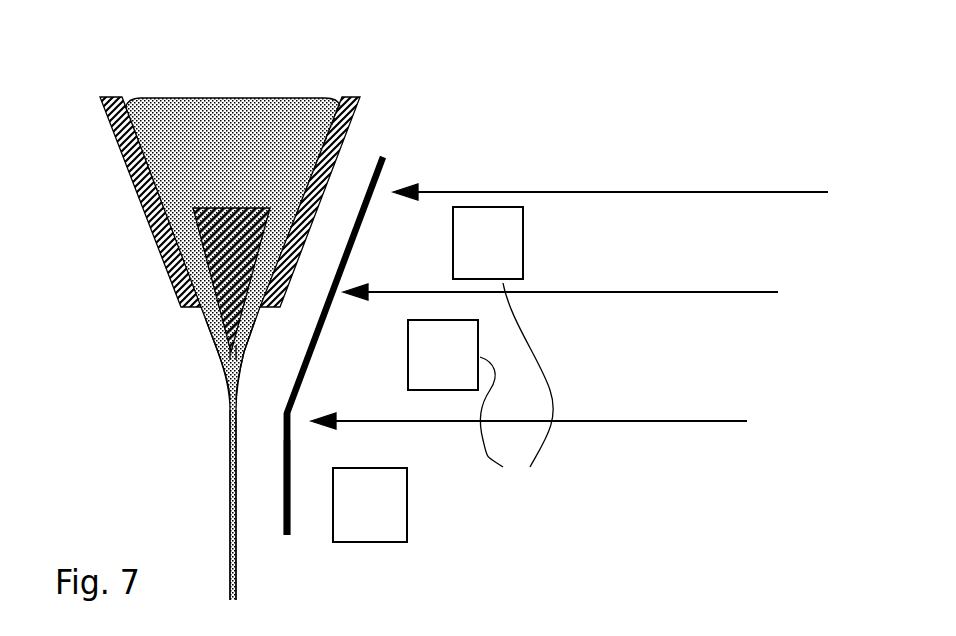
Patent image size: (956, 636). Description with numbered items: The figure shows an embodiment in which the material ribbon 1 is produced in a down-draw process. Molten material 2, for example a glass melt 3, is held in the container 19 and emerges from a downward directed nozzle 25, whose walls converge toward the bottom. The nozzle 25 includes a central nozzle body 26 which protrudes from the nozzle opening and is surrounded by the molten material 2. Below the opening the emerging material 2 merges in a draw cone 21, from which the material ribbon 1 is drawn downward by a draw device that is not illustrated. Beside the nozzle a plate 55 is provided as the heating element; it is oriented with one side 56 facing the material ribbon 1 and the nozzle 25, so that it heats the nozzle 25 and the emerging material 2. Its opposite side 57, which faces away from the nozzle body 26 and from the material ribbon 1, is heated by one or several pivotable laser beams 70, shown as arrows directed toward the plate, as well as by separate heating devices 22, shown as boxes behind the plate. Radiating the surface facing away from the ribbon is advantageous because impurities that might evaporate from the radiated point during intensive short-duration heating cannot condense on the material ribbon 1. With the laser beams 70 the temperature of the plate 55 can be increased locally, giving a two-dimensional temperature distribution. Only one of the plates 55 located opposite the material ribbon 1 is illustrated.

The material ribbon 1 is at (222, 482).
The molten material 2 is at (232, 310).
The glass melt 3 is at (202, 110).
The container 19 is at (128, 177).
The draw cone 21 is at (223, 365).
The heating devices 22 is at (407, 490).
The nozzle 25 is at (195, 345).
The central nozzle body 26 is at (215, 310).
The plate 55 is at (383, 155).
The side of plate 56 is at (283, 450).
The opposite side of plate 57 is at (288, 515).
The laser beam 70 is at (720, 192).